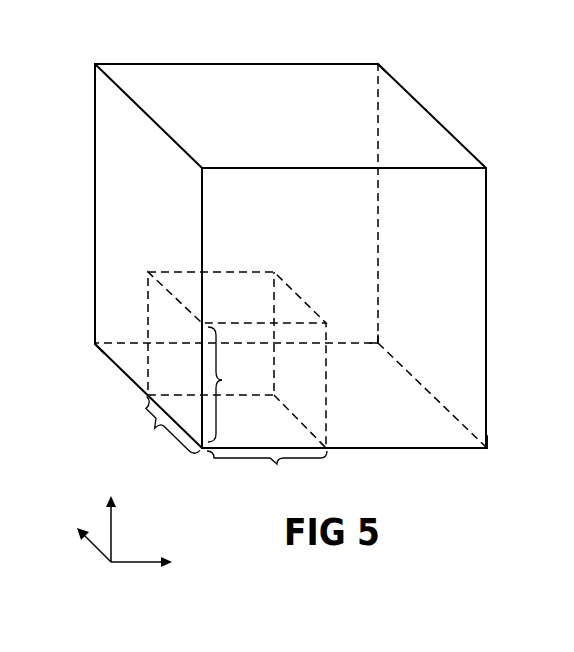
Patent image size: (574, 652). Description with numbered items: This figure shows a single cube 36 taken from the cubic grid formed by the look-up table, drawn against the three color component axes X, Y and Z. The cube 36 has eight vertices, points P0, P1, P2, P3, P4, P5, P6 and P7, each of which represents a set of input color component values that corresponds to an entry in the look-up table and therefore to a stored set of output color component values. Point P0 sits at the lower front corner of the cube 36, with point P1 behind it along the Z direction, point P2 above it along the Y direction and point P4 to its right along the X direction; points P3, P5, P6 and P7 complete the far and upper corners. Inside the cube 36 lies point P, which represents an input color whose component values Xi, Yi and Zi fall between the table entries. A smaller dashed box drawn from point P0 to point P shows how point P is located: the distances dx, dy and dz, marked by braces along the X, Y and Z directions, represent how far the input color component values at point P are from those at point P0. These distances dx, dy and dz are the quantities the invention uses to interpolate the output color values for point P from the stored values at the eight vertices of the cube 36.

The cube 36 is at (238, 62).
The point P is at (237, 348).
The point P0 is at (198, 457).
The point P1 is at (80, 344).
The point P2 is at (188, 176).
The point P3 is at (81, 65).
The point P4 is at (497, 449).
The point P5 is at (391, 335).
The point P6 is at (496, 170).
The point P7 is at (390, 57).
The distance dx is at (267, 470).
The distance dy is at (230, 384).
The distance dz is at (165, 428).
The X axis X is at (151, 561).
The Y axis Y is at (109, 513).
The Z axis Z is at (83, 537).